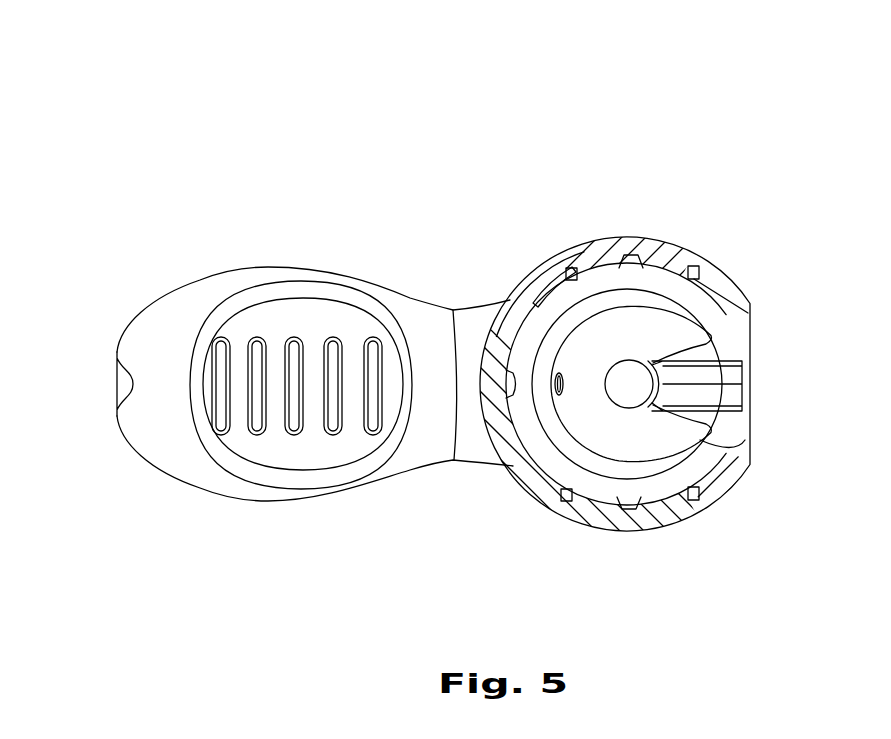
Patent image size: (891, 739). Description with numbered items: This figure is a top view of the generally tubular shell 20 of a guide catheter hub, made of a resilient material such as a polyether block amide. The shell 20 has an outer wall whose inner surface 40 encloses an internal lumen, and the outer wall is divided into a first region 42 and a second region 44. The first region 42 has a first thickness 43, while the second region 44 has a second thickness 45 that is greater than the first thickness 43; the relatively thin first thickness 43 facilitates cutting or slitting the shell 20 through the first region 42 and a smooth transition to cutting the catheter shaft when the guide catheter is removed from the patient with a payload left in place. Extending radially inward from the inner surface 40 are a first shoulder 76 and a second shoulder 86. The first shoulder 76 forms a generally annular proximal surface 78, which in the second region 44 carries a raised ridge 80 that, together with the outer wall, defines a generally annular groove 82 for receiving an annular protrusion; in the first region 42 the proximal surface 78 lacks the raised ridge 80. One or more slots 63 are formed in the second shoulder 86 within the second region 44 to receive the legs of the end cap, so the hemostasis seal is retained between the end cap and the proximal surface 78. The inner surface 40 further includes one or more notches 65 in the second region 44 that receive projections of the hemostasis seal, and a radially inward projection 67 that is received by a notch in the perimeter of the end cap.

The shell 20 is at (797, 91).
The inner surface 40 is at (577, 450).
The first region 42 is at (767, 361).
The first thickness 43 is at (750, 388).
The second region 44 is at (513, 274).
The second thickness 45 is at (553, 268).
The slots 63 is at (698, 270).
The notches 65 is at (633, 267).
The projection 67 is at (505, 380).
The first shoulder 76 is at (705, 300).
The proximal surface 78 is at (695, 468).
The raised ridge 80 is at (585, 408).
The annular groove 82 is at (705, 446).
The second shoulder 86 is at (737, 322).